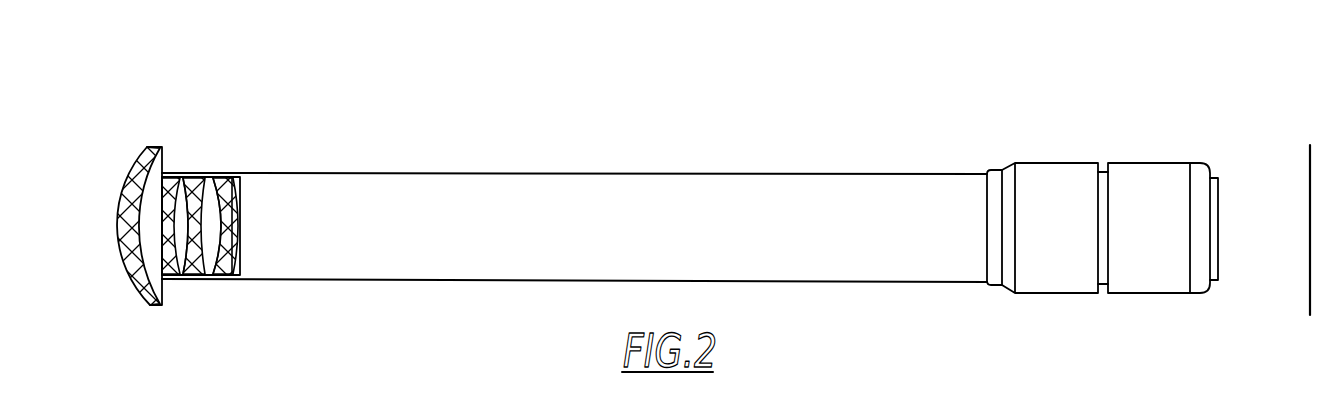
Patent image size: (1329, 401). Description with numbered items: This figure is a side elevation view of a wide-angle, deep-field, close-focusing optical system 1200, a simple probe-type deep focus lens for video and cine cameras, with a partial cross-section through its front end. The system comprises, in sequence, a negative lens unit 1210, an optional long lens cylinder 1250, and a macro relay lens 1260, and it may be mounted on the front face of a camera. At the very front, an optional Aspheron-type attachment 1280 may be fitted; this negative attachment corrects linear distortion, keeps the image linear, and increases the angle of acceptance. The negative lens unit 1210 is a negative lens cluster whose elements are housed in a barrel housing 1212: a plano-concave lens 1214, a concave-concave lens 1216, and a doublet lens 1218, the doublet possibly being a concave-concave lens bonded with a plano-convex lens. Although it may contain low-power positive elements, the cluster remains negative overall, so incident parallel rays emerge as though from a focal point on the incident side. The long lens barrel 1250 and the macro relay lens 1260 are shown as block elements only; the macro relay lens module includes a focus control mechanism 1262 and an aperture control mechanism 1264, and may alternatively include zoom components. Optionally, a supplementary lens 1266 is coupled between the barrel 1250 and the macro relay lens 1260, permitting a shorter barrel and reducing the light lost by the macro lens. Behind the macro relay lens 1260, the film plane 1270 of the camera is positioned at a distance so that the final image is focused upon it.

The optical system 1200 is at (1050, 139).
The lens cylinder 1250 is at (448, 173).
The Aspheron-type attachment 1280 is at (134, 169).
The negative lens unit 1210 is at (193, 172).
The barrel housing 1212 is at (233, 170).
The plano-concave lens 1214 is at (167, 276).
The concave-concave lens 1216 is at (198, 277).
The doublet lens 1218 is at (242, 274).
The supplementary lens 1266 is at (996, 162).
The focus control mechanism 1262 is at (1052, 285).
The aperture control mechanism 1264 is at (1167, 283).
The macro relay lens 1260 is at (1170, 160).
The film plane 1270 is at (1305, 262).